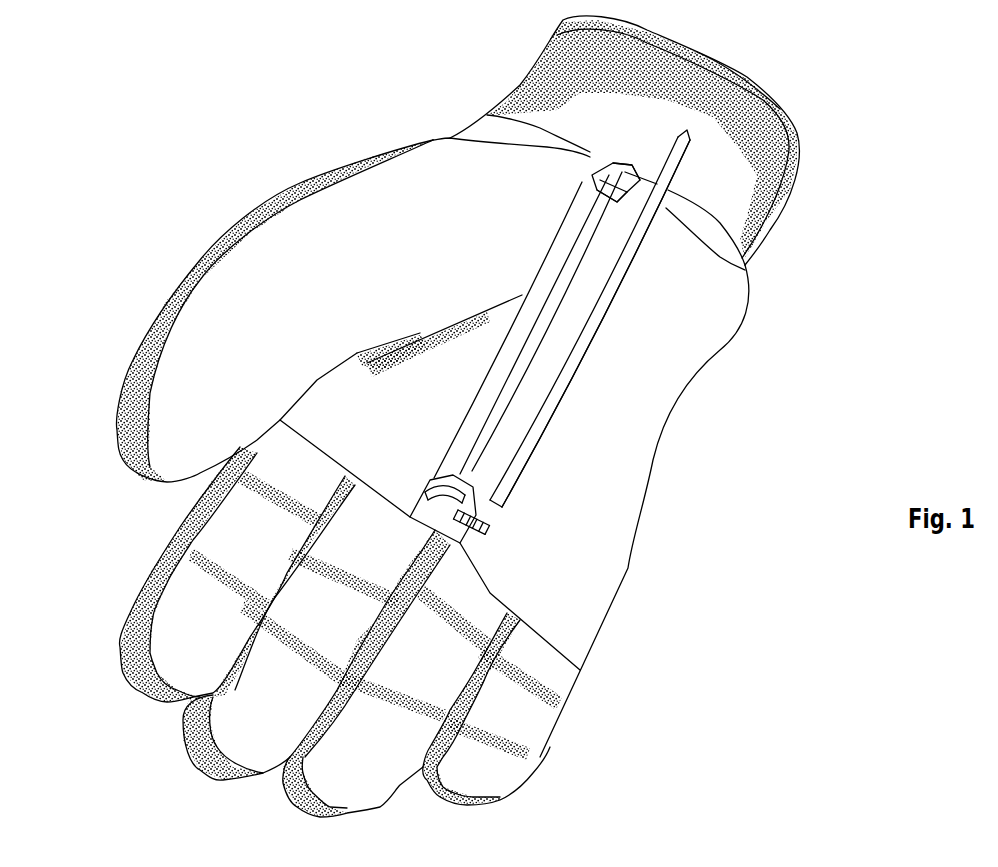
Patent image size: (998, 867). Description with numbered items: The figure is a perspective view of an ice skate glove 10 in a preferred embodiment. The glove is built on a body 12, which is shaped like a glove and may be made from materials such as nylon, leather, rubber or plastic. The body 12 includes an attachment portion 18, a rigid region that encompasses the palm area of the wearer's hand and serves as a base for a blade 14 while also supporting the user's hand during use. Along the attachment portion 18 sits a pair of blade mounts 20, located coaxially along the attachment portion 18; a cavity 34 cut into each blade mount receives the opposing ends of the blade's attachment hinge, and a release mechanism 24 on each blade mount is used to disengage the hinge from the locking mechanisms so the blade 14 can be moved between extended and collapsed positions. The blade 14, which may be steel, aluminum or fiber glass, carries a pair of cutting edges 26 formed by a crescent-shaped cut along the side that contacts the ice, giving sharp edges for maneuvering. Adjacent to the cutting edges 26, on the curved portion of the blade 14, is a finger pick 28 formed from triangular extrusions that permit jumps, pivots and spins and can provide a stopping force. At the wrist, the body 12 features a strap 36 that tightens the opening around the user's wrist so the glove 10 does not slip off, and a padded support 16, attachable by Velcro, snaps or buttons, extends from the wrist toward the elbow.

The ice skate glove 10 is at (108, 160).
The body 12 is at (770, 380).
The blade 14 is at (557, 417).
The padded support 16 is at (645, 80).
The attachment portion 18 is at (432, 228).
The blade mounts 20 is at (573, 193).
The release mechanism 24 is at (620, 187).
The cutting edges 26 is at (682, 169).
The finger pick 28 is at (480, 527).
The cavity 34 is at (613, 200).
The strap 36 is at (752, 92).